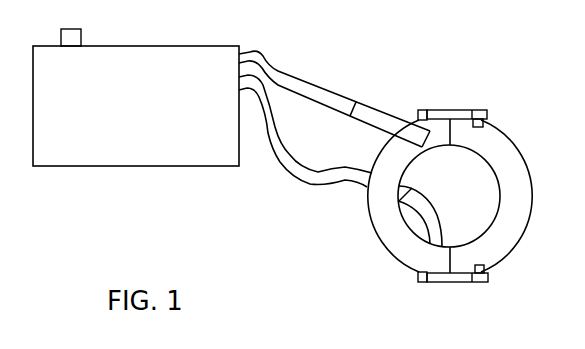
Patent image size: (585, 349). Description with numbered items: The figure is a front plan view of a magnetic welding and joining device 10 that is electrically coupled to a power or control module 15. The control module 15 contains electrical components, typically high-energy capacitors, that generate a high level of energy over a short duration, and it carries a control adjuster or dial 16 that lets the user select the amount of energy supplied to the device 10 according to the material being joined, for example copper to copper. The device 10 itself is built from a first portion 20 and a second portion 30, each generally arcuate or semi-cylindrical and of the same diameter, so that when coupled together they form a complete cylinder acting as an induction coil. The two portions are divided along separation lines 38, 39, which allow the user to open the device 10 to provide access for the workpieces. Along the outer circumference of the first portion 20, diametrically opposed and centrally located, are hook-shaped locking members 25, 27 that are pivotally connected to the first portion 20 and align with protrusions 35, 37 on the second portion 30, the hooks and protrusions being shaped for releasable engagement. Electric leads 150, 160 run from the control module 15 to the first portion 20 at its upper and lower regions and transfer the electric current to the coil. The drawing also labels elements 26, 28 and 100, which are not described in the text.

The magnetic welding and joining device 10 is at (530, 69).
The control module 15 is at (118, 147).
The control adjuster 16 is at (82, 33).
The first portion 20 is at (387, 222).
The locking member 25 is at (455, 113).
The upper bracket fastener 26 is at (421, 112).
The locking member 27 is at (450, 282).
The lower bracket fastener 28 is at (423, 282).
The second portion 30 is at (517, 185).
The protrusion 35 is at (485, 123).
The protrusion 37 is at (485, 270).
The separation line 38 is at (452, 140).
The separation line 39 is at (448, 256).
The central bore 100 is at (460, 200).
The electric lead 150 is at (374, 120).
The electric lead 160 is at (431, 212).